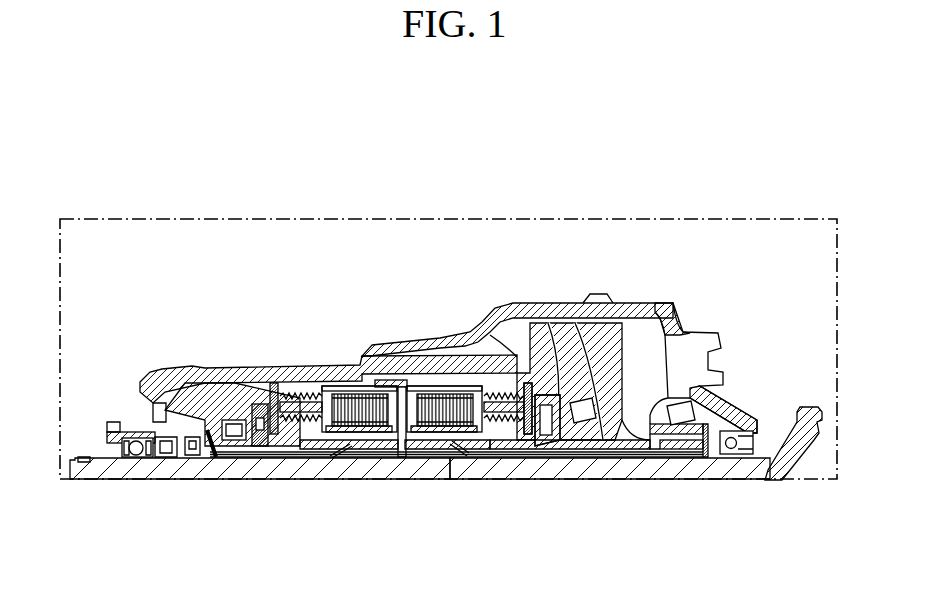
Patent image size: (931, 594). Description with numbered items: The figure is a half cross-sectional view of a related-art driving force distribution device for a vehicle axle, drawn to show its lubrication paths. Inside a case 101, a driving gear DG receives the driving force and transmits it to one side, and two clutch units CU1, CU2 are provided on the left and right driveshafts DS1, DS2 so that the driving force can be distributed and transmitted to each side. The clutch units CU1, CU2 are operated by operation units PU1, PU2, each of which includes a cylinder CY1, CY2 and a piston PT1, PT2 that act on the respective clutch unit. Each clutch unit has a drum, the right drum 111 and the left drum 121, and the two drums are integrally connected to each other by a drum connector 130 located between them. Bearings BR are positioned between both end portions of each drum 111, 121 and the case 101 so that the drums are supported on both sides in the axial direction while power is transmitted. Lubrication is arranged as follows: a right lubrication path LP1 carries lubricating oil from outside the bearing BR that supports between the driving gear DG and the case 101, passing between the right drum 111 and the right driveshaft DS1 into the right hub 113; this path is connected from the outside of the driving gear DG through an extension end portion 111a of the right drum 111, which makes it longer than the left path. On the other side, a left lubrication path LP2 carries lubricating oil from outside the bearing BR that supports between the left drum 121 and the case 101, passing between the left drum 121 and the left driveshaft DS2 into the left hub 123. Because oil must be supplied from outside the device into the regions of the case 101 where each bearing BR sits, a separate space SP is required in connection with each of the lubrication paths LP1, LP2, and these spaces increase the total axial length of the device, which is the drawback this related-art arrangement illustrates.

The case 101 is at (263, 372).
The piston PT2 is at (275, 380).
The right operation unit PU2 is at (288, 380).
The right clutch unit CU2 is at (347, 372).
The drum connector 130 is at (387, 385).
The left clutch unit CU1 is at (437, 370).
The left operation unit PU1 is at (497, 380).
The piston PT1 is at (528, 383).
The driving gear DG is at (613, 390).
The extension end portion 111a is at (643, 447).
The bearing BR is at (233, 430).
The space SP is at (208, 425).
The left lubrication path LP2 is at (232, 456).
The left drum 121 is at (250, 450).
The cylinder CY2 is at (282, 448).
The left driveshaft DS2 is at (305, 470).
The left hub 123 is at (357, 455).
The right hub 113 is at (433, 450).
The right lubrication path LP1 is at (483, 455).
The right drum 111 is at (507, 460).
The cylinder CY1 is at (530, 442).
The right driveshaft DS1 is at (670, 470).